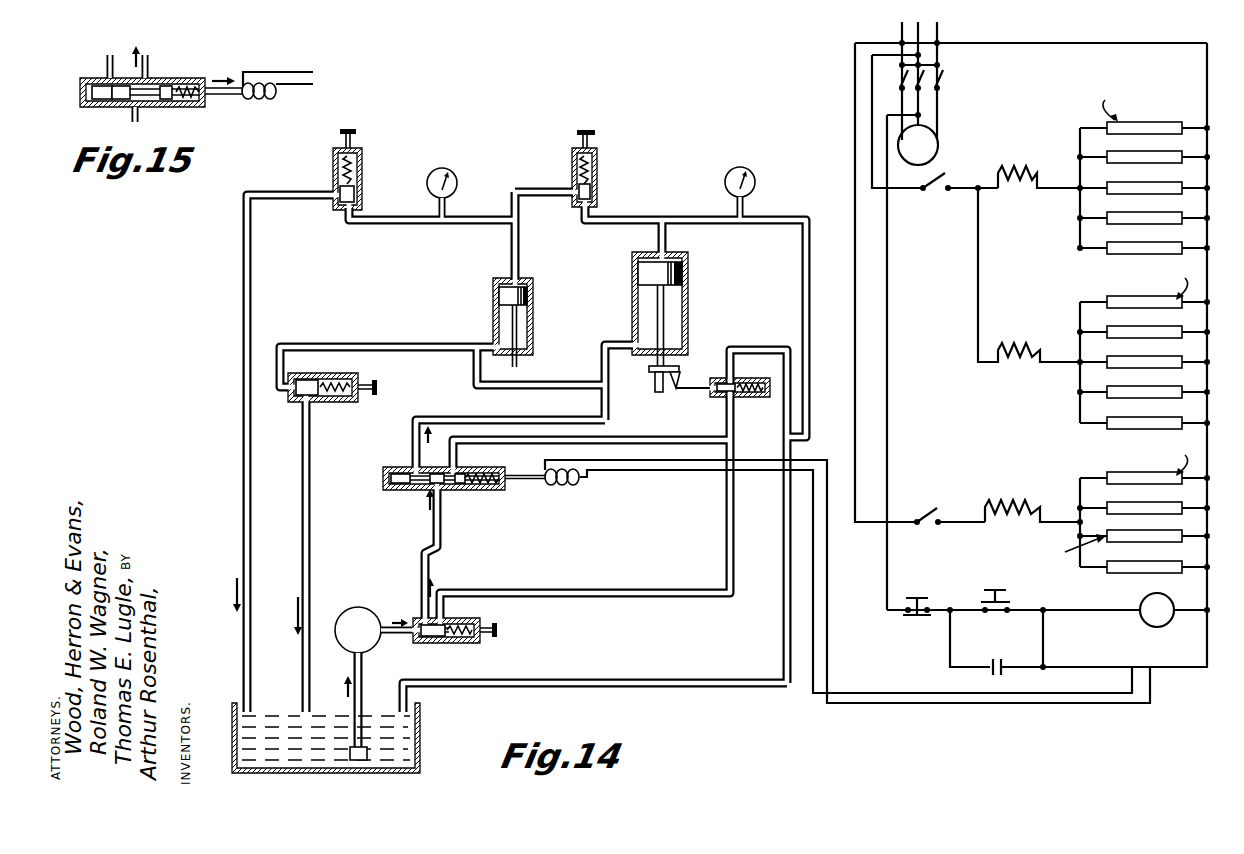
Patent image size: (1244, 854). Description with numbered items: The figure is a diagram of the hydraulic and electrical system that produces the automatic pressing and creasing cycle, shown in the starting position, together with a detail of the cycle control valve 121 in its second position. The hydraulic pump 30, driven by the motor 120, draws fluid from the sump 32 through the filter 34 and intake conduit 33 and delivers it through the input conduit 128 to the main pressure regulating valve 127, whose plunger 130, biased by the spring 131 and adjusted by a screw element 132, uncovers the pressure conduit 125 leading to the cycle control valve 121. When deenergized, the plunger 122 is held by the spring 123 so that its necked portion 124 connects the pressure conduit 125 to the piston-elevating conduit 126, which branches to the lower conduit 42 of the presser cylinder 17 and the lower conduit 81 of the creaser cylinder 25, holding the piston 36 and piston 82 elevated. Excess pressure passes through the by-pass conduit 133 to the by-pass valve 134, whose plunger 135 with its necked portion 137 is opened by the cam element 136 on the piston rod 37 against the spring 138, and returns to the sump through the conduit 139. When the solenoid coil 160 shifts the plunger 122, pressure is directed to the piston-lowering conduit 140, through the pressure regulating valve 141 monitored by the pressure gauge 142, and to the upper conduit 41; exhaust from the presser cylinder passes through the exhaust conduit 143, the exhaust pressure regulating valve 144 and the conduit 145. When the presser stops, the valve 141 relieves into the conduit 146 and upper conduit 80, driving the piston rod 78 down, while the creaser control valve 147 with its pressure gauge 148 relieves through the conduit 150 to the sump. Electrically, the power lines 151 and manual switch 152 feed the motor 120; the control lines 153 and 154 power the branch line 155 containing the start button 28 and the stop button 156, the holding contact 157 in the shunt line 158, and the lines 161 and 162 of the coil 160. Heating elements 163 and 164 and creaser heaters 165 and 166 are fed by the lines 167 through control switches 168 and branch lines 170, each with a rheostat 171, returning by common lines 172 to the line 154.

In FIG. 14, the presser cylinder 17 is at (682, 321).
In FIG. 14, the creaser cylinder 25 is at (514, 322).
In FIG. 14, the start button 28 is at (1010, 594).
In FIG. 14, the hydraulic pump 30 is at (342, 645).
In FIG. 14, the fluid reservoir or sump 32 is at (420, 725).
In FIG. 14, the intake conduit 33 is at (362, 676).
In FIG. 14, the filter 34 is at (360, 760).
In FIG. 14, the piston 36 is at (684, 272).
In FIG. 14, the piston rod 37 is at (665, 333).
In FIG. 14, the upper conduit 41 is at (666, 237).
In FIG. 14, the lower conduit 42 is at (608, 358).
In FIG. 14, the piston rod 78 is at (517, 340).
In FIG. 14, the upper conduit 80 is at (520, 254).
In FIG. 14, the lower conduit 81 is at (460, 343).
In FIG. 14, the piston 82 is at (500, 296).
In FIG. 14, the motor 120 is at (938, 142).
In FIG. 15, the cycle control valve 121 is at (89, 74).
In FIG. 14, the cycle control valve 121 is at (455, 467).
In FIG. 15, the plunger 122 is at (92, 108).
In FIG. 14, the plunger 122 is at (397, 488).
In FIG. 15, the spring 123 is at (203, 108).
In FIG. 14, the spring 123 is at (500, 488).
In FIG. 15, the necked portion 124 is at (125, 108).
In FIG. 14, the necked portion 124 is at (430, 465).
In FIG. 15, the pressure conduit 125 is at (136, 120).
In FIG. 14, the pressure conduit 125 is at (430, 545).
In FIG. 15, the piston-elevating conduit 126 is at (111, 54).
In FIG. 14, the piston-elevating conduit 126 is at (492, 418).
In FIG. 14, the main pressure regulating valve 127 is at (474, 637).
In FIG. 14, the input conduit 128 is at (430, 640).
In FIG. 14, the plunger 130 is at (444, 620).
In FIG. 14, the spring 131 is at (475, 622).
In FIG. 14, the screw element 132 is at (356, 131).
In FIG. 14, the by-pass conduit 133 is at (640, 596).
In FIG. 14, the by-pass valve 134 is at (744, 397).
In FIG. 14, the plunger 135 is at (718, 398).
In FIG. 14, the cam element 136 is at (685, 370).
In FIG. 14, the necked portion 137 is at (754, 369).
In FIG. 14, the spring 138 is at (758, 394).
In FIG. 14, the conduit 139 is at (705, 686).
In FIG. 15, the piston-lowering conduit 140 is at (148, 56).
In FIG. 14, the piston-lowering conduit 140 is at (800, 212).
In FIG. 14, the pressure regulating valve 141 is at (598, 158).
In FIG. 14, the pressure gauge 142 is at (741, 167).
In FIG. 14, the exhaust conduit 143 is at (545, 385).
In FIG. 14, the exhaust pressure regulating valve 144 is at (290, 405).
In FIG. 14, the conduit 145 is at (303, 552).
In FIG. 14, the conduit 146 is at (517, 188).
In FIG. 14, the creaser control valve 147 is at (372, 152).
In FIG. 14, the pressure gauge 148 is at (440, 168).
In FIG. 14, the conduit 150 is at (252, 284).
In FIG. 14, the power lines 151 is at (940, 28).
In FIG. 14, the manual switch 152 is at (945, 68).
In FIG. 14, the line 153 is at (888, 382).
In FIG. 14, the line 154 is at (1208, 86).
In FIG. 14, the branch line 155 is at (1088, 612).
In FIG. 14, the stop button 156 is at (912, 618).
In FIG. 14, the holding contact 157 is at (990, 672).
In FIG. 14, the line 158 is at (950, 648).
In FIG. 15, the coil 160 is at (273, 98).
In FIG. 14, the coil 160 is at (578, 487).
In FIG. 15, the line 161 is at (277, 70).
In FIG. 14, the line 161 is at (690, 461).
In FIG. 15, the line 162 is at (313, 82).
In FIG. 14, the line 162 is at (705, 472).
In FIG. 14, the heating elements 163 is at (1150, 134).
In FIG. 14, the heating elements 164 is at (1148, 306).
In FIG. 14, the creaser heaters 165 is at (1145, 482).
In FIG. 14, the creaser heaters 166 is at (1140, 562).
In FIG. 14, the lines 167 is at (898, 190).
In FIG. 14, the control switches 168 is at (945, 175).
In FIG. 14, the branch lines 170 is at (948, 192).
In FIG. 14, the rheostat 171 is at (1022, 162).
In FIG. 14, the wire 172 is at (1190, 152).